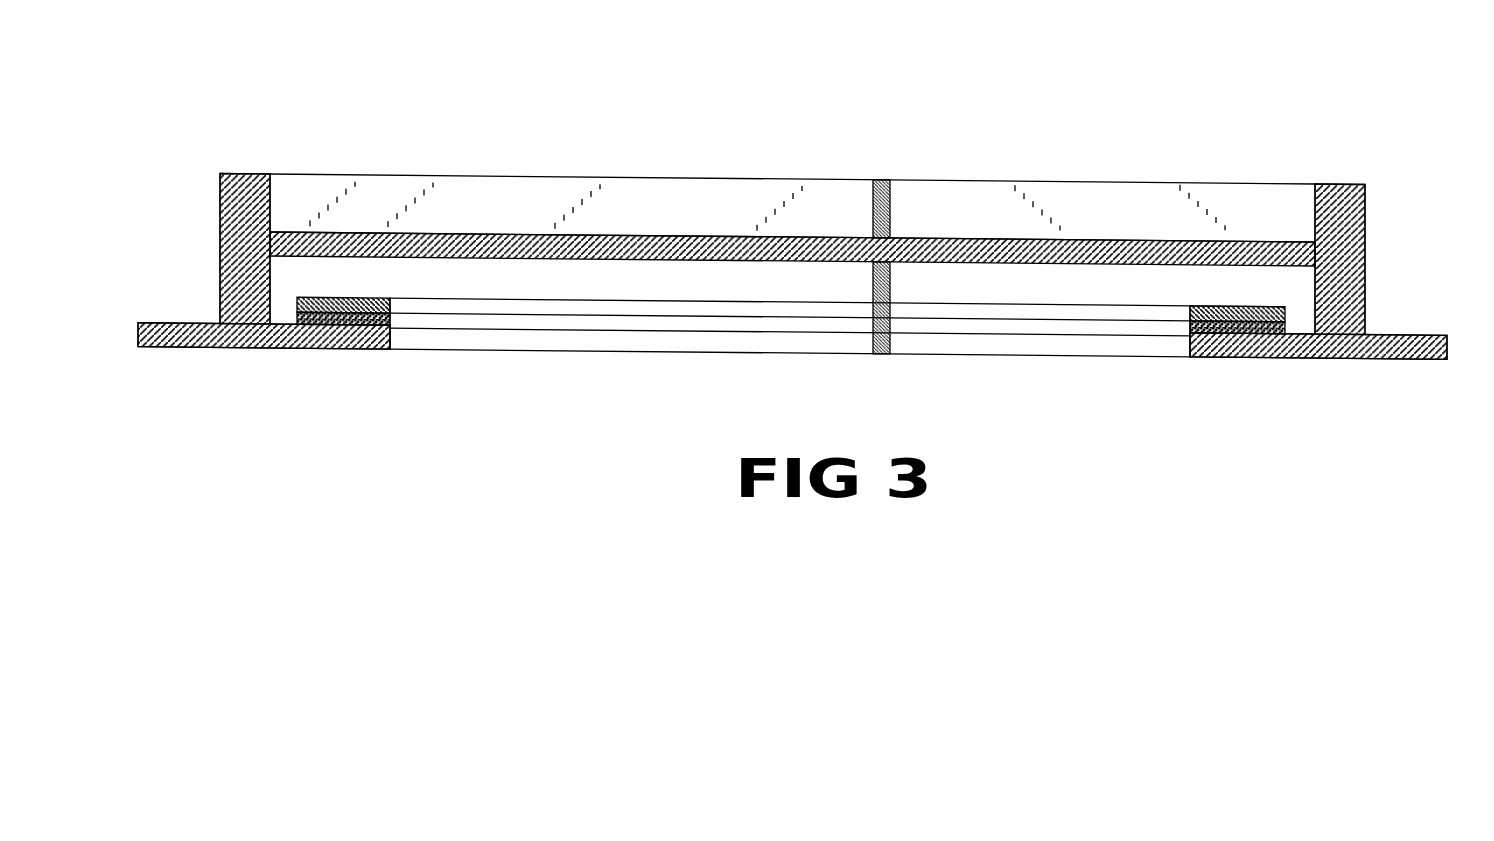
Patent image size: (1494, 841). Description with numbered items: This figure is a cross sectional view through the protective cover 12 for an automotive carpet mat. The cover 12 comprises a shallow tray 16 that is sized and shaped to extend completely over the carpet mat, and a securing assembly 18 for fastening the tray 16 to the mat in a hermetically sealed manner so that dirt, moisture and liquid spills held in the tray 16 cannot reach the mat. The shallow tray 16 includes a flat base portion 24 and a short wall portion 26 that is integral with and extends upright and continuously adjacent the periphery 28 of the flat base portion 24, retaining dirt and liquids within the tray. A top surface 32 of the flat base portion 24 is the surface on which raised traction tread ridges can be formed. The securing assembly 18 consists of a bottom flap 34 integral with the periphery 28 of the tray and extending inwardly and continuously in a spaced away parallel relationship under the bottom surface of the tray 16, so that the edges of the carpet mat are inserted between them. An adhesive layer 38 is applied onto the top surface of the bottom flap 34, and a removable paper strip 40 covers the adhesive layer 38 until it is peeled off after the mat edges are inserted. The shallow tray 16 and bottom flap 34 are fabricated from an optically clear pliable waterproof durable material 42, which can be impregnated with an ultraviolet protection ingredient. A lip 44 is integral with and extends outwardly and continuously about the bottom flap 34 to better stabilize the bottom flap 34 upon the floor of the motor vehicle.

The protective cover 12 is at (1050, 86).
The shallow tray 16 is at (650, 177).
The securing assembly 18 is at (358, 350).
The flat base portion 24 is at (731, 230).
The short wall portion 26 is at (827, 177).
The periphery 28 is at (220, 231).
The top surface 32 is at (443, 232).
The bottom flap 34 is at (1243, 357).
The adhesive layer 38 is at (1276, 344).
The removable paper strip 40 is at (1287, 312).
The optically clear pliable waterproof durable material 42 is at (1345, 203).
The lip 44 is at (194, 348).